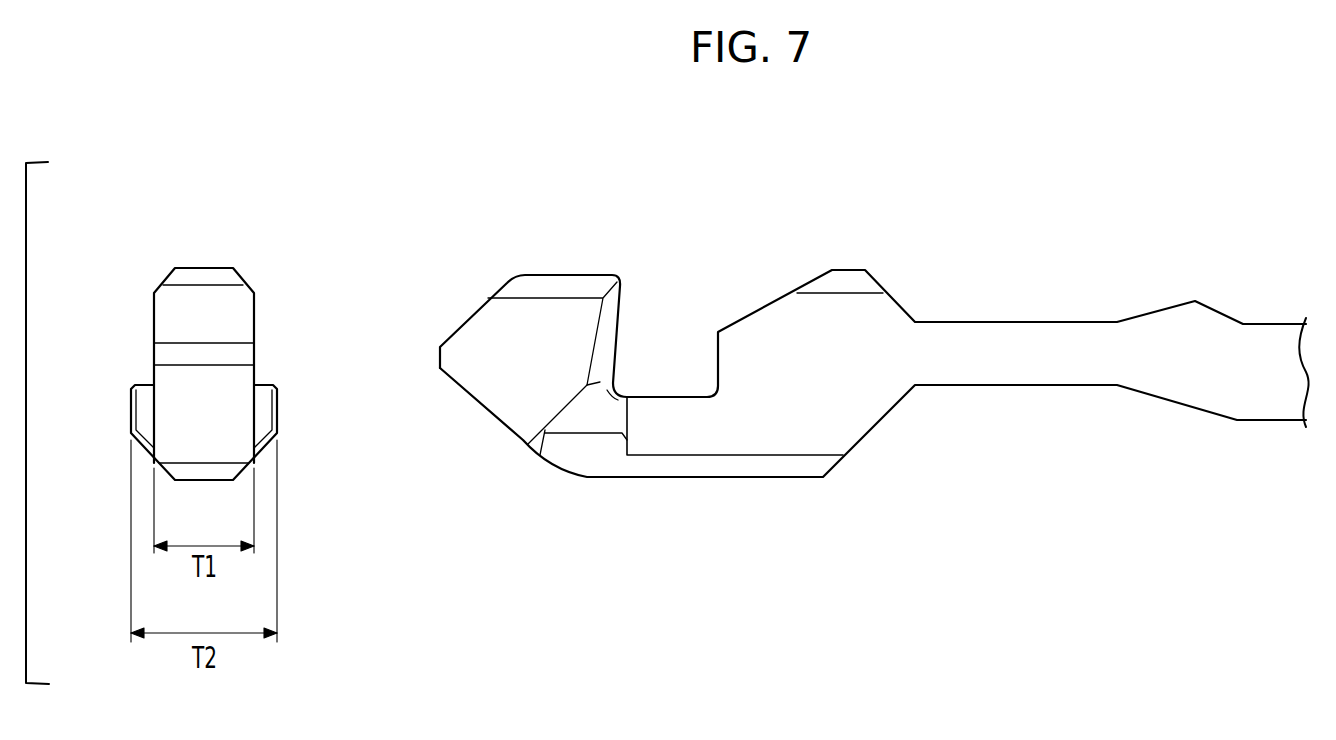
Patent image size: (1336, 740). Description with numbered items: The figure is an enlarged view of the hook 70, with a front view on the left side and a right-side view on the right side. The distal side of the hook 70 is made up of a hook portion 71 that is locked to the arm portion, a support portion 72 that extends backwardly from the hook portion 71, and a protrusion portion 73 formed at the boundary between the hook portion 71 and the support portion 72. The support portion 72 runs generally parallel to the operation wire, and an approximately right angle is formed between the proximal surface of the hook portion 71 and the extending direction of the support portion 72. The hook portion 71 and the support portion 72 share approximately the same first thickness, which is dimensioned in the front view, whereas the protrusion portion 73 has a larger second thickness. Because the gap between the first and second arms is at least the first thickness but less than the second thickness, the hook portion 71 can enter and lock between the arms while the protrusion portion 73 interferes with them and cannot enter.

The hook 70 is at (855, 249).
The hook portion 71 is at (238, 321).
The support portion 72 is at (678, 442).
The protrusion portion 73 is at (263, 411).